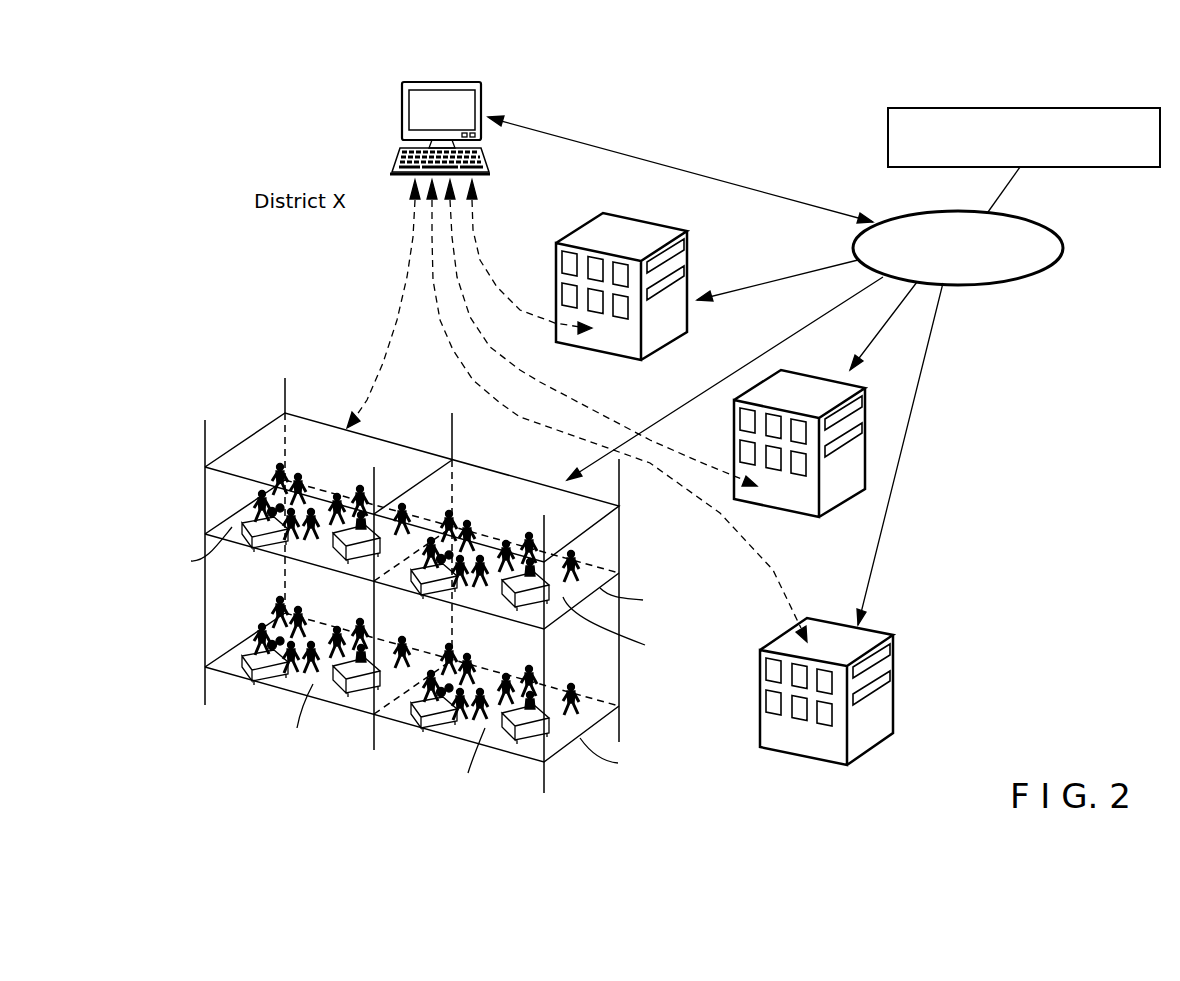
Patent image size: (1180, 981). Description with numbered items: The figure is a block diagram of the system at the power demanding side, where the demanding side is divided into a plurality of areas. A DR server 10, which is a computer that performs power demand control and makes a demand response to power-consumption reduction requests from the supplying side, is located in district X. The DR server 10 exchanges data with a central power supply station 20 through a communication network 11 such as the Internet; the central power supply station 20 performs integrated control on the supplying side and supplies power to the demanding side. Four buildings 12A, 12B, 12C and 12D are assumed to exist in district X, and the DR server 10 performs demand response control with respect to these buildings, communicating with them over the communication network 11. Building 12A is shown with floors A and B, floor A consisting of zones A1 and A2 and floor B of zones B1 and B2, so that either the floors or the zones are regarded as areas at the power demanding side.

The DR server 10 is at (456, 82).
The central power supply station 20 is at (1070, 108).
The communication network 11 is at (1063, 248).
The building 12A is at (420, 743).
The building 12B is at (893, 712).
The building 12C is at (803, 517).
The building 12D is at (626, 360).